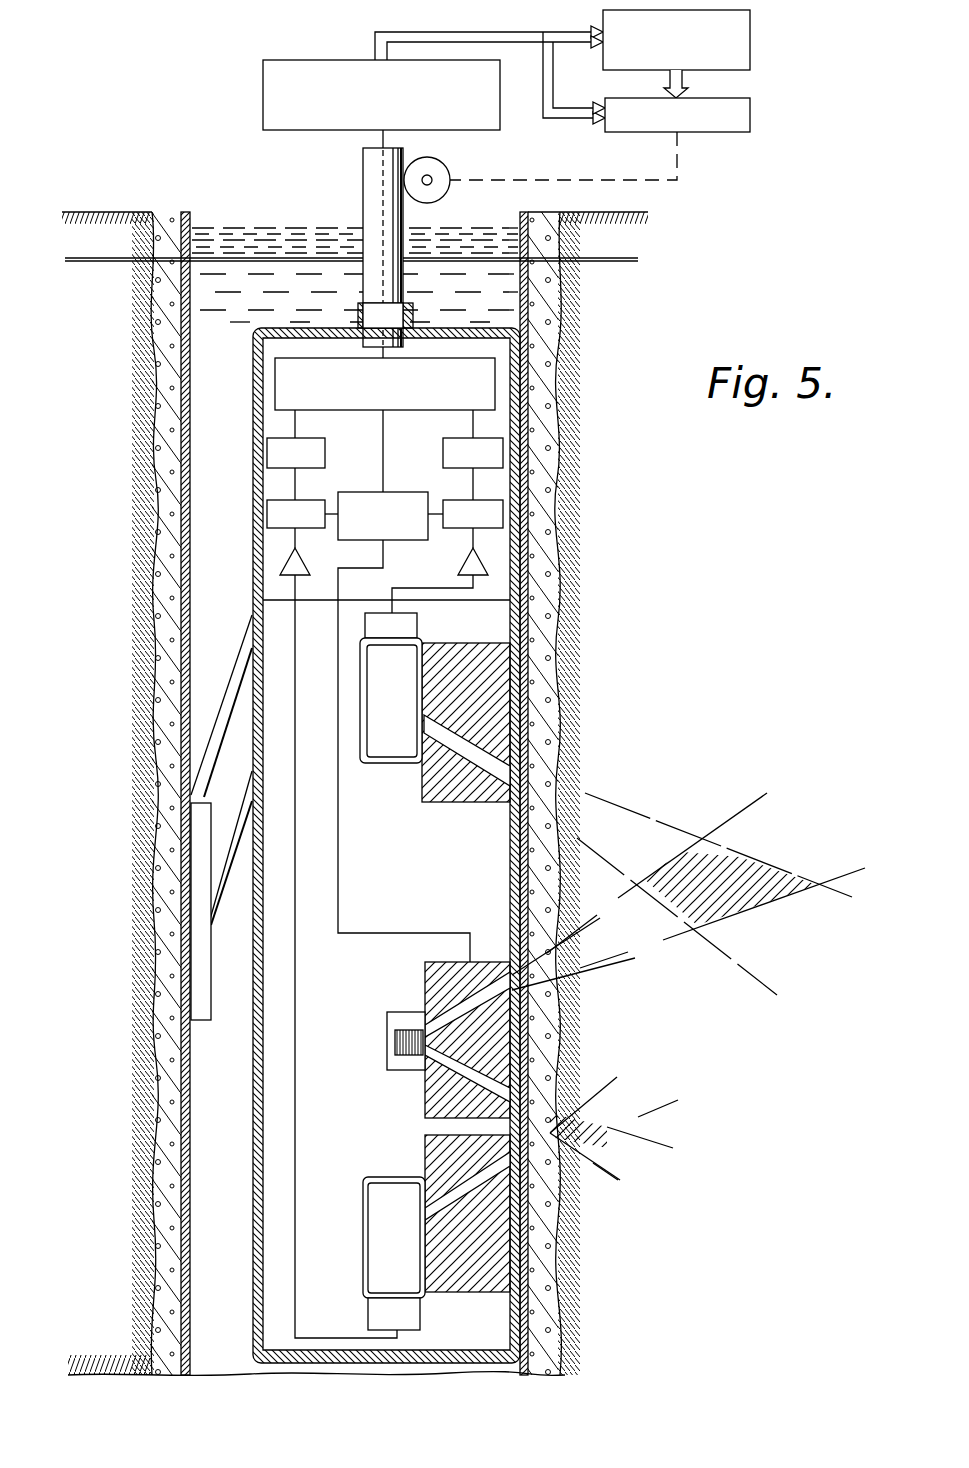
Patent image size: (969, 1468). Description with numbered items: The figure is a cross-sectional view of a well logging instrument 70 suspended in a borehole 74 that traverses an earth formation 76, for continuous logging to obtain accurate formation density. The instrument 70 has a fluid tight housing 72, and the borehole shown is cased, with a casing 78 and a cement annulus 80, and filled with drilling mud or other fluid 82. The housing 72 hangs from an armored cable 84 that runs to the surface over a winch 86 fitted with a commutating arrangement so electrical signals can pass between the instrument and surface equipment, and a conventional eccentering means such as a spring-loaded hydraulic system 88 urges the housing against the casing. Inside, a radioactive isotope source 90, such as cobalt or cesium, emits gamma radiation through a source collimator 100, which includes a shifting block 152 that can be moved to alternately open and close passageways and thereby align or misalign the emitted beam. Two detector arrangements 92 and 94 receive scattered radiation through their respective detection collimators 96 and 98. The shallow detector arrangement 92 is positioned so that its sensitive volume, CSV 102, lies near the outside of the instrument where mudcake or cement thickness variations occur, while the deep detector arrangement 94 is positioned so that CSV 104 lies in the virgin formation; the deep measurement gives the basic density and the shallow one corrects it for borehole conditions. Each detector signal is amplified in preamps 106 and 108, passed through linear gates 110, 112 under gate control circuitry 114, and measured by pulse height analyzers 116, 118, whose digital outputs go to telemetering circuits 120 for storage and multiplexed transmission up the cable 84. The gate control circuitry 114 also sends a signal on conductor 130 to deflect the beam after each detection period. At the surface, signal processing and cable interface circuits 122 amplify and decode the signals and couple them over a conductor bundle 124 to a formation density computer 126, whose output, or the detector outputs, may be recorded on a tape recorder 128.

The instrument 70 is at (238, 388).
The fluid tight housing 72 is at (327, 303).
The borehole 74 is at (143, 510).
The earth formation 76 is at (137, 480).
The casing 78 is at (188, 448).
The cement annulus 80 is at (157, 588).
The fluid 82 is at (227, 227).
The armored cable 84 is at (362, 183).
The winch 86 is at (428, 170).
The spring-loaded hydraulic system 88 is at (218, 1007).
The radioactive isotope source 90 is at (395, 1042).
The detector arrangement 92 is at (375, 1177).
The detector arrangement 94 is at (388, 767).
The detection collimator 96 is at (470, 1285).
The detection collimator 98 is at (457, 802).
The source collimator 100 is at (423, 978).
The CSV 102 is at (598, 1113).
The CSV 104 is at (757, 862).
The preamp 106 is at (308, 560).
The preamp 108 is at (457, 562).
The linear gate 110 is at (303, 500).
The linear gate 112 is at (460, 528).
The gate control circuitry 114 is at (404, 492).
The pulse height analyzer 116 is at (325, 460).
The pulse height analyzer 118 is at (448, 437).
The telemetering circuits 120 is at (337, 412).
The signal processing and cable interface circuits 122 is at (282, 58).
The conductor bundle 124 is at (455, 32).
The formation density computer 126 is at (743, 37).
The tape recorder 128 is at (748, 117).
The conductor 130 is at (338, 885).
The shifting block 152 is at (540, 1017).